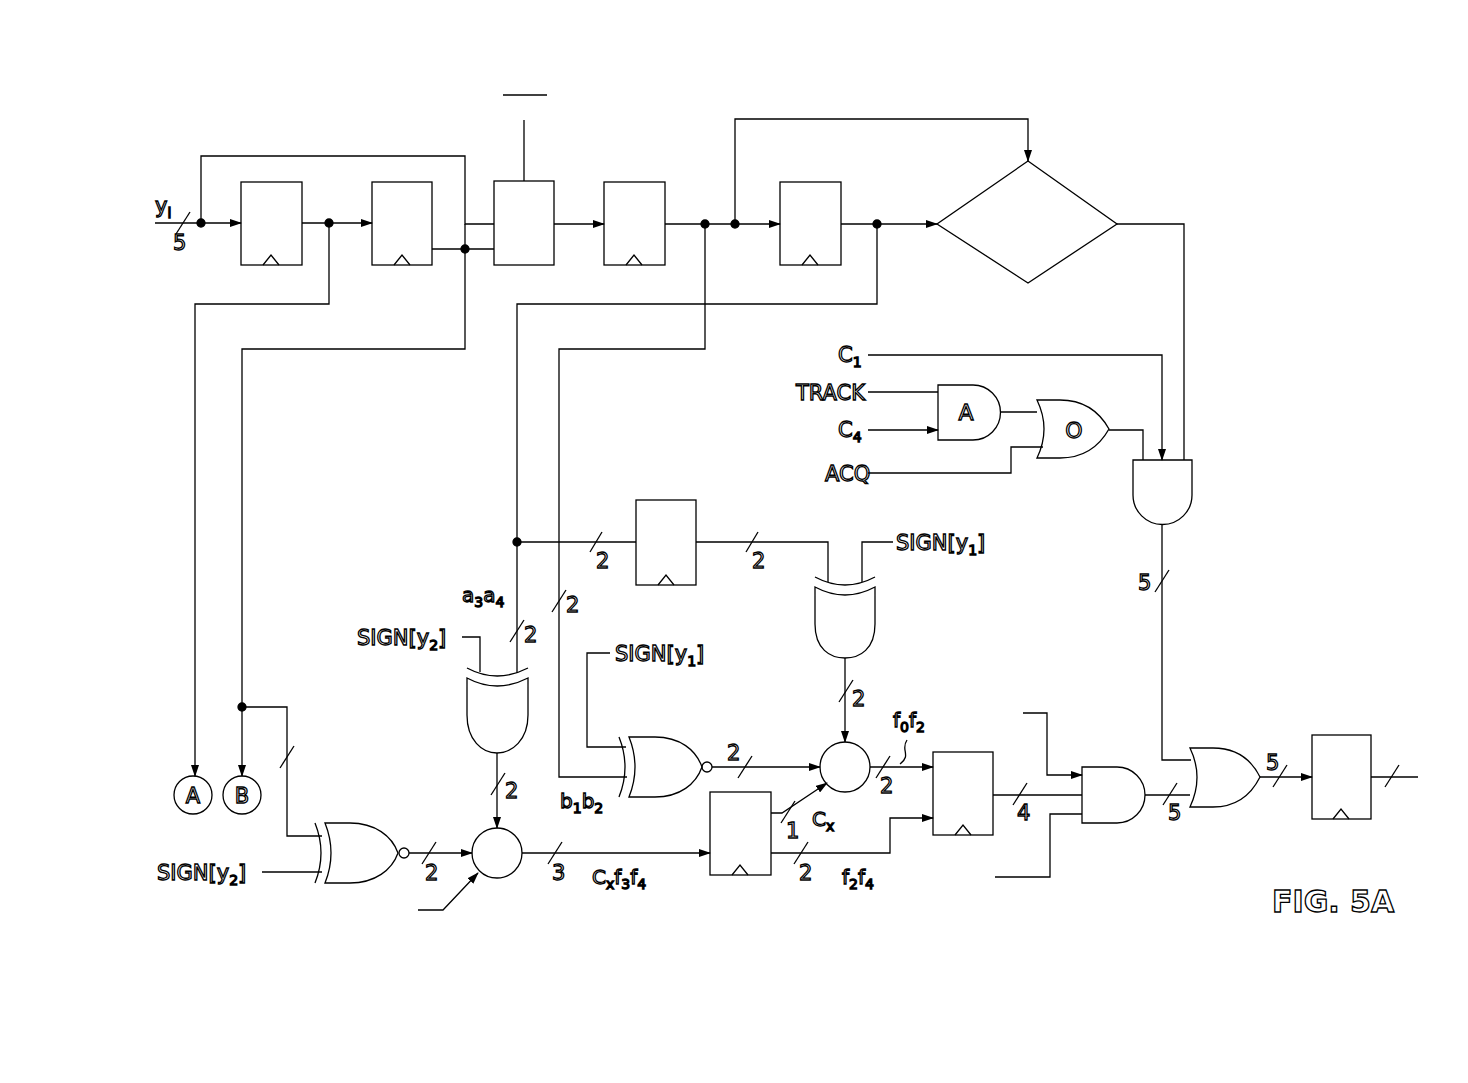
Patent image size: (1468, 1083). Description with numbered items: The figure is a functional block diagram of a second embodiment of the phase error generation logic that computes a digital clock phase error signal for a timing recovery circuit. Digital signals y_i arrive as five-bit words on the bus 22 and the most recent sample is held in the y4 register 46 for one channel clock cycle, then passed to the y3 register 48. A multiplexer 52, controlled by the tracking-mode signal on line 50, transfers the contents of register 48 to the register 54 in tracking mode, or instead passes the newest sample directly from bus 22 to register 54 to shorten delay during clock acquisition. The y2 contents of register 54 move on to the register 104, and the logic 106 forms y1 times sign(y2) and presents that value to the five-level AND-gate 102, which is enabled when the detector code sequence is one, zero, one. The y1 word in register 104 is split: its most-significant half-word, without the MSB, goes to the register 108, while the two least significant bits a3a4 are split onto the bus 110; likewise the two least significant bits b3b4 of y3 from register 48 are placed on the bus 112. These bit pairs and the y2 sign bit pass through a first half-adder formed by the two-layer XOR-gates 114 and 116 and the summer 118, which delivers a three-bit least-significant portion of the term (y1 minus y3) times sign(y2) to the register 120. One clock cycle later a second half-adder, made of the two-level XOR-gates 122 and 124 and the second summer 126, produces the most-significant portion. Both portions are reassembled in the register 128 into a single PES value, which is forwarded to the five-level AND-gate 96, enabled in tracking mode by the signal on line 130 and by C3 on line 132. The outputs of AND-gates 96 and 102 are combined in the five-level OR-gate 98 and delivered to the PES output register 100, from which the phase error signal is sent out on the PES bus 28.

The bus 22 is at (252, 156).
The y4 register 46 is at (281, 182).
The y3 register 48 is at (408, 182).
The tracking-mode signal line 50 is at (520, 163).
The multiplexer 52 is at (556, 190).
The register 54 is at (645, 182).
The register 104 is at (815, 182).
The logic 106 is at (1058, 177).
The 5-level AND-gate 102 is at (1192, 490).
The bus 110 is at (517, 563).
The register 108 is at (664, 500).
The 2-level XOR-gate 122 is at (875, 618).
The 2-layer XOR-gate 114 is at (467, 700).
The 2-level XOR-gate 124 is at (685, 737).
The second summer 126 is at (860, 745).
The register 128 is at (953, 752).
The line 132 is at (1047, 728).
The line 130 is at (1050, 875).
The 5-level AND-gate 96 is at (1125, 823).
The 5-level OR-gate 98 is at (1215, 748).
The PES output register 100 is at (1340, 735).
The PES bus 28 is at (1406, 790).
The bus 112 is at (288, 720).
The 2-layer XOR-gate 116 is at (380, 823).
The summer 118 is at (502, 876).
The register 120 is at (720, 875).